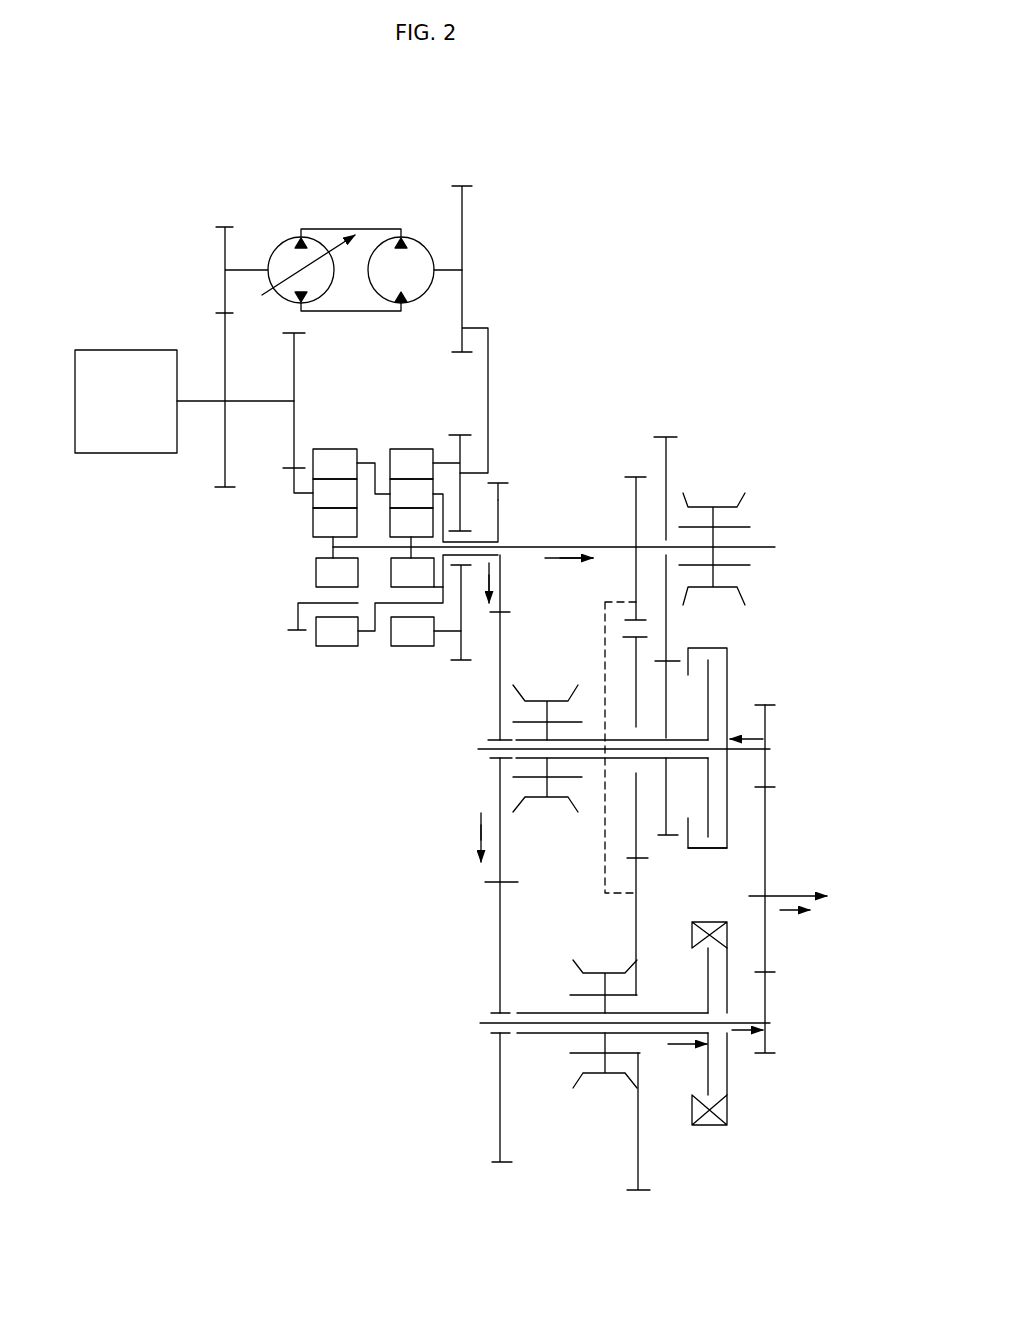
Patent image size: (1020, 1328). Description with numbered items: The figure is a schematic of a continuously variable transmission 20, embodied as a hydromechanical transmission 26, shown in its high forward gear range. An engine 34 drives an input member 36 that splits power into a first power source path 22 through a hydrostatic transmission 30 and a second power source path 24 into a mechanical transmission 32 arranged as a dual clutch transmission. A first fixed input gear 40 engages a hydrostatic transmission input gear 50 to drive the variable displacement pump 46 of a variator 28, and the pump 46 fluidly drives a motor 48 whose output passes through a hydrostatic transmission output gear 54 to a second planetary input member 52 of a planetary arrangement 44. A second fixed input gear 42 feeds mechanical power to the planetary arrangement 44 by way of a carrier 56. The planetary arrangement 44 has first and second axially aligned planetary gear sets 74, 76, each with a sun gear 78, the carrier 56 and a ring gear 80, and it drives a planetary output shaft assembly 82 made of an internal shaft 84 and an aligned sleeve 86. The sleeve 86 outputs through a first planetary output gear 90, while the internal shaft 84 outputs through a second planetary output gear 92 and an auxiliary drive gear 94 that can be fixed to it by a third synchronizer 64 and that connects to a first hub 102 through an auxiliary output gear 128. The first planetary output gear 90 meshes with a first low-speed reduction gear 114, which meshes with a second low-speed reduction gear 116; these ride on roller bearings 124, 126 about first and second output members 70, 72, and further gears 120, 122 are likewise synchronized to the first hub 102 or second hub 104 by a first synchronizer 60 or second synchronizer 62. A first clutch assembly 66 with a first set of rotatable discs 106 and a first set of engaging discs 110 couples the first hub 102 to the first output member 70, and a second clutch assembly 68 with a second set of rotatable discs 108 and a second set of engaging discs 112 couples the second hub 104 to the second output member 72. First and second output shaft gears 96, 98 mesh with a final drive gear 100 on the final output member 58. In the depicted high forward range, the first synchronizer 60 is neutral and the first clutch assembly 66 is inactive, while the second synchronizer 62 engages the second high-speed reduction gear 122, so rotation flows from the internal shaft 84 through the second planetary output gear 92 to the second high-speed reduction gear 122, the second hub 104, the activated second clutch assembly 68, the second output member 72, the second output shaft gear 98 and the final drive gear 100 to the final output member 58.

The continuously variable transmission 20 is at (587, 245).
The first power source path 22 is at (335, 177).
The second power source path 24 is at (248, 513).
The hydromechanical transmission 26 is at (112, 333).
The variator 28 is at (360, 218).
The hydrostatic transmission 30 is at (379, 322).
The mechanical transmission 32 is at (427, 883).
The engine 34 is at (126, 401).
The input member 36 is at (278, 400).
The first fixed input gear 40 is at (225, 452).
The second fixed input gear 42 is at (293, 413).
The planetary arrangement 44 is at (315, 657).
The variable displacement pump 46 is at (283, 242).
The motor 48 is at (425, 237).
The hydrostatic transmission input gear 50 is at (223, 243).
The second planetary input member 52 is at (448, 440).
The hydrostatic transmission output gear 54 is at (462, 223).
The carrier 56 is at (335, 493).
The final output member 58 is at (788, 894).
The first synchronizer 60 is at (540, 700).
The second synchronizer 62 is at (617, 972).
The third synchronizer 64 is at (707, 507).
The first clutch assembly 66 is at (740, 637).
The second clutch assembly 68 is at (710, 1138).
The first output member 70 is at (488, 741).
The second output member 72 is at (489, 1022).
The first axially aligned planetary gear set 74 is at (313, 633).
The second axially aligned planetary gear set 76 is at (390, 640).
The sun gear 78 is at (335, 533).
The ring gear 80 is at (351, 471).
The planetary output shaft assembly 82 is at (590, 433).
The internal shaft 84 is at (582, 547).
The aligned sleeve 86 is at (494, 540).
The first planetary output gear 90 is at (503, 483).
The second planetary output gear 92 is at (635, 503).
The auxiliary drive gear 94 is at (666, 453).
The first output shaft gear 96 is at (768, 705).
The second output shaft gear 98 is at (767, 1002).
The final drive gear 100 is at (767, 827).
The first hub 102 is at (688, 726).
The second hub 104 is at (688, 1013).
The first set of rotatable discs 106 is at (707, 773).
The second set of rotatable discs 108 is at (710, 1072).
The first set of engaging discs 110 is at (689, 645).
The second set of engaging discs 112 is at (700, 922).
The first low-speed reduction gear 114 is at (500, 697).
The second low-speed reduction gear 116 is at (502, 1108).
The gear 120 is at (604, 652).
The second high-speed reduction gear 122 is at (640, 1118).
The roller bearing 124 is at (493, 760).
The roller bearing 126 is at (495, 1037).
The auxiliary output gear 128 is at (688, 696).